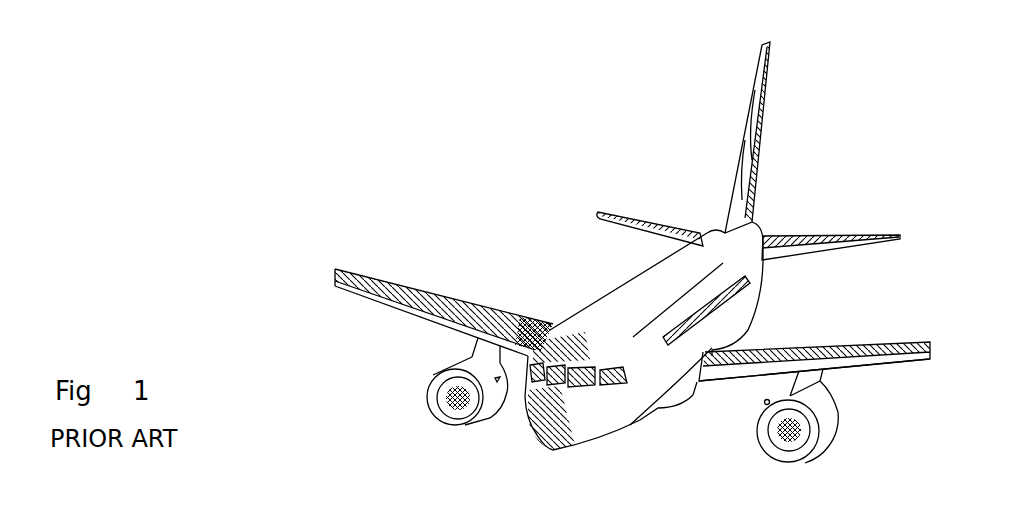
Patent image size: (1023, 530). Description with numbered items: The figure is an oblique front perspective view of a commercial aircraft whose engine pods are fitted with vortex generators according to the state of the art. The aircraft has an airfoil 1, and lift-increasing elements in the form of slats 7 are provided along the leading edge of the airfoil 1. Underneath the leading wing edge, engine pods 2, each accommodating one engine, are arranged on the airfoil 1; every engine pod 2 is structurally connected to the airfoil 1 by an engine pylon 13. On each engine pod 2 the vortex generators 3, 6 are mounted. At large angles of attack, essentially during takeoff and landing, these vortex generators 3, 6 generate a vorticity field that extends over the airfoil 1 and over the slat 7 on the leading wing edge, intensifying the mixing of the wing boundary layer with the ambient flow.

The airfoil 1 is at (410, 300).
The engine pod 2 is at (492, 403).
The vortex generator 3 is at (497, 380).
The vortex generator 6 is at (440, 374).
The slat 7 is at (365, 298).
The engine pylon 13 is at (477, 350).